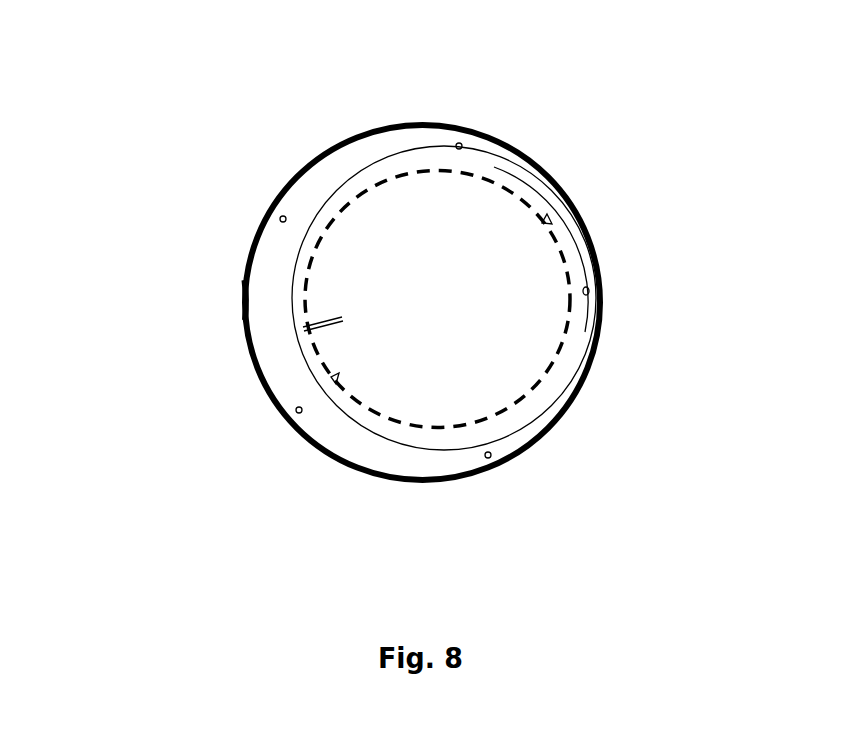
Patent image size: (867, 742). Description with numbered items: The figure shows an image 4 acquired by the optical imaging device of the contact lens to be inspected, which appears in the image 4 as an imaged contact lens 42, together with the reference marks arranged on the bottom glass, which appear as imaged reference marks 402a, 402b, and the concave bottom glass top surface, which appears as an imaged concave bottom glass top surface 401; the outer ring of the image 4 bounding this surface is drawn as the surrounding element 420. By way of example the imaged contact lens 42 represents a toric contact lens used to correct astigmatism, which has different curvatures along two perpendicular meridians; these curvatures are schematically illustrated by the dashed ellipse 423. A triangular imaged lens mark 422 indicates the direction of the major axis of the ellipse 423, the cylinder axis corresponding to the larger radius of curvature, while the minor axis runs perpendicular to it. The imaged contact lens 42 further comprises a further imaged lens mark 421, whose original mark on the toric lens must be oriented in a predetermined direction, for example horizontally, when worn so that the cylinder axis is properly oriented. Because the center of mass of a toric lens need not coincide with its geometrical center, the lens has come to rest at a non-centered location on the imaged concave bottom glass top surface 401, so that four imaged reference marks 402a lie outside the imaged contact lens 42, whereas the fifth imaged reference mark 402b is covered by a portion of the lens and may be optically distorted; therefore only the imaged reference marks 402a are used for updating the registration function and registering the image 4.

The image 4 is at (172, 230).
The imaged concave bottom glass top surface 401 is at (270, 278).
The imaged reference marks 402a is at (445, 141).
The imaged reference mark 402b is at (575, 279).
The cover ring 420 is at (500, 119).
The imaged contact lens 42 is at (398, 452).
The imaged lens mark 421 is at (319, 318).
The triangular imaged lens mark 422 is at (541, 221).
The ellipse 423 is at (567, 320).